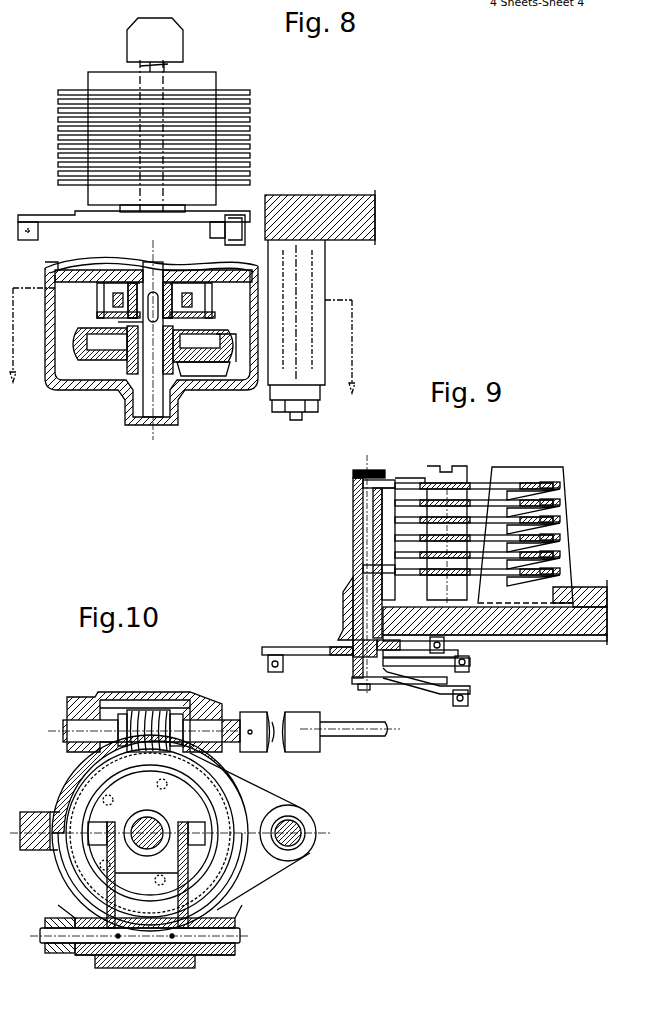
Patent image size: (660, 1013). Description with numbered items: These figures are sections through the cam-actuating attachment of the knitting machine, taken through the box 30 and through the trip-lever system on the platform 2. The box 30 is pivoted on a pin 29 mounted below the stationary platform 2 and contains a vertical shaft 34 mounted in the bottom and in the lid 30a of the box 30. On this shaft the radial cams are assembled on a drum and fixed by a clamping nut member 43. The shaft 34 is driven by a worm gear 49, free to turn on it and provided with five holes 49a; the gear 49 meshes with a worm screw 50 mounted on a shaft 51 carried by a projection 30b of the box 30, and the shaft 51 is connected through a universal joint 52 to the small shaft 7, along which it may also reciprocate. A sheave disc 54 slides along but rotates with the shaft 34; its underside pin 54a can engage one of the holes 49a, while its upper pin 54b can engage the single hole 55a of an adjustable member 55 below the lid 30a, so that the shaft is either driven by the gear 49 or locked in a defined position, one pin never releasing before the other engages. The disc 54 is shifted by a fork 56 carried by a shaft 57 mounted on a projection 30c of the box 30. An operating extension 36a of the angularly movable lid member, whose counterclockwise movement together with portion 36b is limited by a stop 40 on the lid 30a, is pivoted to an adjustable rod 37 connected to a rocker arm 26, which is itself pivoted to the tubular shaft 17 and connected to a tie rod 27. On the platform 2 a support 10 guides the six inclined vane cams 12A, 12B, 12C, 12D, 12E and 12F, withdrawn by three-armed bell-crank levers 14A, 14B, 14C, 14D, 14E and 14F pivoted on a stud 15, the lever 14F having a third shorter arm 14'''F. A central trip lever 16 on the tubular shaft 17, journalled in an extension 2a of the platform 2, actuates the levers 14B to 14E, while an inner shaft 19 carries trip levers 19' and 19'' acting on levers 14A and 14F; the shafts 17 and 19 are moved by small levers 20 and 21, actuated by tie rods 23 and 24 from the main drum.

In FIG. 8, the stationary platform 2 is at (335, 195).
In FIG. 9, the stationary platform 2 is at (586, 628).
In FIG. 9, the extension of the platform 2a is at (342, 610).
In FIG. 10, the small shaft 7 is at (362, 740).
In FIG. 9, the support 10 is at (527, 463).
In FIG. 9, the vane cam 12A is at (569, 573).
In FIG. 9, the vane cam 12B is at (569, 555).
In FIG. 9, the vane cam 12C is at (569, 538).
In FIG. 9, the vane cam 12D is at (569, 520).
In FIG. 9, the vane cam 12E is at (569, 503).
In FIG. 9, the vane cam 12F is at (548, 480).
In FIG. 9, the bell-crank lever 14A is at (475, 625).
In FIG. 9, the bell-crank lever 14B is at (452, 560).
In FIG. 9, the bell-crank lever 14C is at (432, 545).
In FIG. 9, the bell-crank lever 14D is at (448, 515).
In FIG. 9, the bell-crank lever 14E is at (472, 498).
In FIG. 9, the bell-crank lever 14F is at (506, 480).
In FIG. 9, the third shorter arm 14'''F is at (401, 461).
In FIG. 9, the column or stud 15 is at (440, 468).
In FIG. 9, the central trip lever 16 is at (378, 510).
In FIG. 9, the tubular shaft 17 is at (353, 551).
In FIG. 9, the second shaft 19 is at (369, 575).
In FIG. 9, the trip lever 19' is at (343, 575).
In FIG. 9, the trip lever 19'' is at (343, 485).
In FIG. 9, the small lever 20 is at (410, 664).
In FIG. 9, the small lever 21 is at (442, 700).
In FIG. 9, the tie rod 23 is at (470, 662).
In FIG. 9, the tie rod 24 is at (470, 700).
In FIG. 9, the rocker arm 26 is at (323, 658).
In FIG. 9, the tie rod 27 is at (436, 655).
In FIG. 8, the pin 29 is at (288, 418).
In FIG. 10, the pin 29 is at (306, 853).
In FIG. 8, the box 30 is at (208, 393).
In FIG. 10, the box 30 is at (262, 890).
In FIG. 8, the lid of the box 30a is at (48, 267).
In FIG. 10, the projection of the box 30b is at (172, 694).
In FIG. 10, the projection of the box 30c is at (190, 967).
In FIG. 8, the vertical shaft 34 is at (140, 398).
In FIG. 8, the operating extension 36a is at (40, 212).
In FIG. 8, the lid member portion 36b is at (240, 212).
In FIG. 8, the adjustable rod 37 is at (40, 232).
In FIG. 8, the stop 40 is at (226, 218).
In FIG. 8, the clamping nut member 43 is at (200, 74).
In FIG. 8, the worm gear 49 is at (120, 343).
In FIG. 10, the worm gear 49 is at (72, 790).
In FIG. 8, the holes 49a is at (198, 340).
In FIG. 10, the holes 49a is at (110, 798).
In FIG. 10, the worm screw 50 is at (135, 704).
In FIG. 10, the shaft 51 is at (66, 722).
In FIG. 10, the universal joint 52 is at (289, 752).
In FIG. 8, the sheave disc 54 is at (206, 314).
In FIG. 10, the sheave disc 54 is at (90, 858).
In FIG. 8, the pin 54a is at (226, 345).
In FIG. 8, the pin 54b is at (214, 284).
In FIG. 8, the adjustable member 55 is at (62, 291).
In FIG. 8, the single hole 55a is at (196, 262).
In FIG. 10, the fork 56 is at (180, 826).
In FIG. 10, the shaft 57 is at (88, 955).